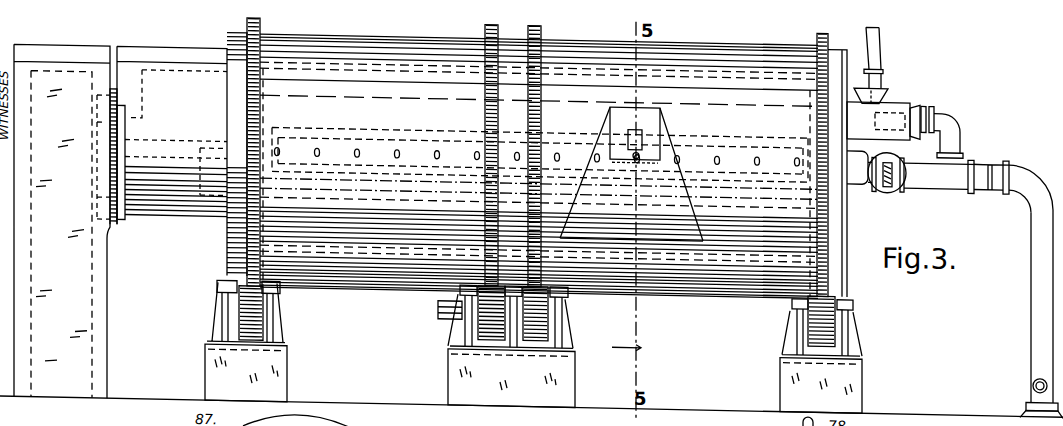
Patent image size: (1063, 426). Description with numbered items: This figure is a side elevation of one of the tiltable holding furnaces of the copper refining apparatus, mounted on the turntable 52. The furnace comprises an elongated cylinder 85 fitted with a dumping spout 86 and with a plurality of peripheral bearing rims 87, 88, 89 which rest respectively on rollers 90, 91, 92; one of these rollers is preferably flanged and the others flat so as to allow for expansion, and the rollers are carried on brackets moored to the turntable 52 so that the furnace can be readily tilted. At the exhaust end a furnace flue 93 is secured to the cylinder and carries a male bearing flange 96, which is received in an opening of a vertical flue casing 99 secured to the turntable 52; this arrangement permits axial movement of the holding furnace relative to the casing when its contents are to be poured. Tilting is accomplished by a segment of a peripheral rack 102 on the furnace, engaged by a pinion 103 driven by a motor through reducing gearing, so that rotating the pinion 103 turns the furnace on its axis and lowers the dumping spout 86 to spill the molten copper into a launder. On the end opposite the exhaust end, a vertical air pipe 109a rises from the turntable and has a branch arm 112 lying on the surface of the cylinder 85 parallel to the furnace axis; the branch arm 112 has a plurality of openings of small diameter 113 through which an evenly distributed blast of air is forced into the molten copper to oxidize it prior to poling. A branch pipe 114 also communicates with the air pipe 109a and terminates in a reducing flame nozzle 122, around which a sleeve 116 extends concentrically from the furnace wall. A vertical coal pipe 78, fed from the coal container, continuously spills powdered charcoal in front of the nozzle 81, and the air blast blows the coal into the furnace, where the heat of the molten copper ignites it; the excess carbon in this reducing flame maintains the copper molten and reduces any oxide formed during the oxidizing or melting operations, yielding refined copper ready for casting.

The turntable 52 is at (380, 393).
The vertical coal pipe 78 is at (880, 33).
The nozzle 81 is at (932, 100).
The elongated cylinder 85 is at (539, 166).
The dumping spout 86 is at (650, 119).
The peripheral bearing rim 87 is at (262, 22).
The peripheral bearing rim 88 is at (543, 25).
The peripheral bearing rim 89 is at (829, 30).
The roller 90 is at (240, 307).
The roller 91 is at (550, 300).
The roller 92 is at (832, 301).
The furnace flue 93 is at (193, 72).
The male bearing flange 96 is at (118, 223).
The vertical flue casing 99 is at (68, 57).
The peripheral rack segment 102 is at (483, 236).
The pinion 103 is at (480, 324).
The vertical air pipe 109a is at (1037, 302).
The branch arm 112 is at (855, 145).
The openings of small diameter 113 is at (396, 142).
The branch pipe 114 is at (957, 117).
The sleeve 116 is at (889, 86).
The reducing flame nozzle 122 is at (895, 96).